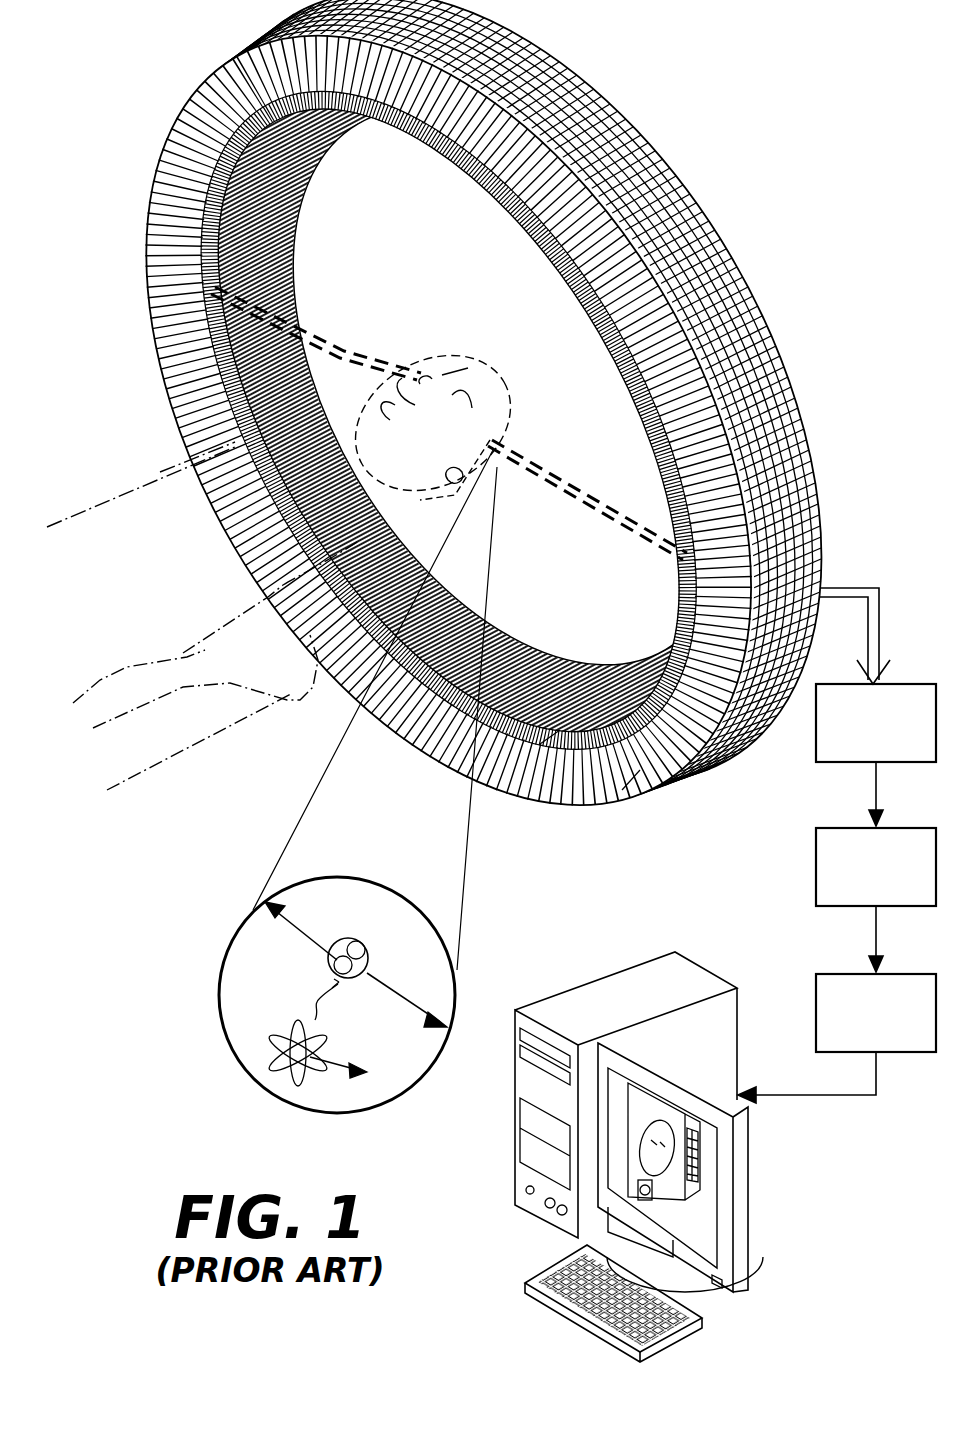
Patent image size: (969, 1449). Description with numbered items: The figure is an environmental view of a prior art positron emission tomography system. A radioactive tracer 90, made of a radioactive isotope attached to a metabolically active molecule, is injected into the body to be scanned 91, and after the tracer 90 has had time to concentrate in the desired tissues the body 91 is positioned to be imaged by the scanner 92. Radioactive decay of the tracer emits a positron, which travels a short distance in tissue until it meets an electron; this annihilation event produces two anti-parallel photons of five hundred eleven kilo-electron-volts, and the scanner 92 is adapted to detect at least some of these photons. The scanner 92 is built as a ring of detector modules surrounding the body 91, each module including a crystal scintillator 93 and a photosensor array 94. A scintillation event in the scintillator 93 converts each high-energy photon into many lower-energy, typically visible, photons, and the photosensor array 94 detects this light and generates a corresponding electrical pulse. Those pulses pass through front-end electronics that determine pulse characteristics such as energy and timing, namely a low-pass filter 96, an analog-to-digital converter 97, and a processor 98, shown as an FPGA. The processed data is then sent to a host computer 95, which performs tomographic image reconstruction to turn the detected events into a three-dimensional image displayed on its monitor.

The radioactive tracer 90 is at (403, 1090).
The body to be scanned 91 is at (158, 480).
The scanner 92 is at (228, 57).
The crystal scintillator 93 is at (548, 742).
The photosensor array 94 is at (634, 782).
The host computer 95 is at (600, 985).
The low-pass filter 96 is at (816, 740).
The analog-to-digital converter 97 is at (816, 877).
The processor 98 is at (816, 1005).